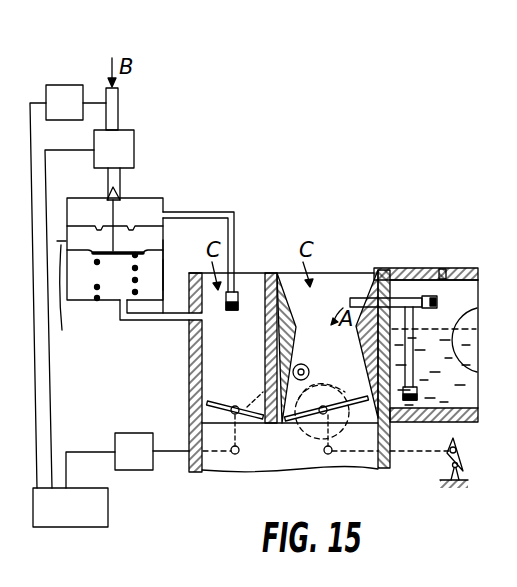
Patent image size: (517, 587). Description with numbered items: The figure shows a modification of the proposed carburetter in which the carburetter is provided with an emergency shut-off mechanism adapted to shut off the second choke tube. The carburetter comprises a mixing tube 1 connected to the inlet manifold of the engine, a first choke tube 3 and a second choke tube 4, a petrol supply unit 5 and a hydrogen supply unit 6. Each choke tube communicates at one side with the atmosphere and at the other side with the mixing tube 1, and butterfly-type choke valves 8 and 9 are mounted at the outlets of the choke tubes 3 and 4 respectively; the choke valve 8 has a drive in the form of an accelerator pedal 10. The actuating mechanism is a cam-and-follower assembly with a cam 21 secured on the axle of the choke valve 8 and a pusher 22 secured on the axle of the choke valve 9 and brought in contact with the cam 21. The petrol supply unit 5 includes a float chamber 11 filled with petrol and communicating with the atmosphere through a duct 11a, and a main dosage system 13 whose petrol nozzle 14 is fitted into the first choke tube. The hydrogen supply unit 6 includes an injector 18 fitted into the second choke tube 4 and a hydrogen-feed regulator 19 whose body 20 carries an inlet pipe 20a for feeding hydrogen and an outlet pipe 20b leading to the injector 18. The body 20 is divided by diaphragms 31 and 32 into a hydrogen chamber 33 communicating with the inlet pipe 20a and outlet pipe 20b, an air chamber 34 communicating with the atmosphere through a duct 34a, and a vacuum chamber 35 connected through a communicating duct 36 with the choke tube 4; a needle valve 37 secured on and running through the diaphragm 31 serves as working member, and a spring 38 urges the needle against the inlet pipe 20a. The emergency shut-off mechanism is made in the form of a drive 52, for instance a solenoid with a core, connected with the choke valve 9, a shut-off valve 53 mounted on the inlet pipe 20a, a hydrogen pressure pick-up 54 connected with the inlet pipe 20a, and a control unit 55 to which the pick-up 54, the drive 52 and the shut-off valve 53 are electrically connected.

The mixing tube 1 is at (392, 462).
The first choke tube 3 is at (367, 259).
The second choke tube 4 is at (259, 271).
The petrol supply unit 5 is at (425, 257).
The hydrogen supply unit 6 is at (188, 194).
The choke valve 8 is at (361, 401).
The choke valve 9 is at (219, 403).
The accelerator pedal 10 is at (463, 459).
The float chamber 11 is at (478, 421).
The duct 11a is at (444, 268).
The main dosage system 13 is at (421, 338).
The petrol nozzle 14 is at (358, 302).
The injector 18 is at (228, 311).
The hydrogen-feed regulator 19 is at (95, 313).
The body 20 is at (167, 278).
The inlet pipe 20a is at (113, 113).
The outlet pipe 20b is at (217, 212).
The cam 21 is at (326, 386).
The pusher 22 is at (302, 363).
The diaphragm 31 is at (80, 205).
The diaphragm 32 is at (101, 282).
The hydrogen chamber 33 is at (153, 199).
The air chamber 34 is at (159, 246).
The duct 34a is at (69, 296).
The vacuum chamber 35 is at (157, 292).
The communicating duct 36 is at (135, 322).
The needle valve 37 is at (118, 208).
The spring 38 is at (123, 274).
The drive 52 is at (134, 451).
The shut-off valve 53 is at (114, 149).
The hydrogen pressure pick-up 54 is at (64, 102).
The control unit 55 is at (70, 507).